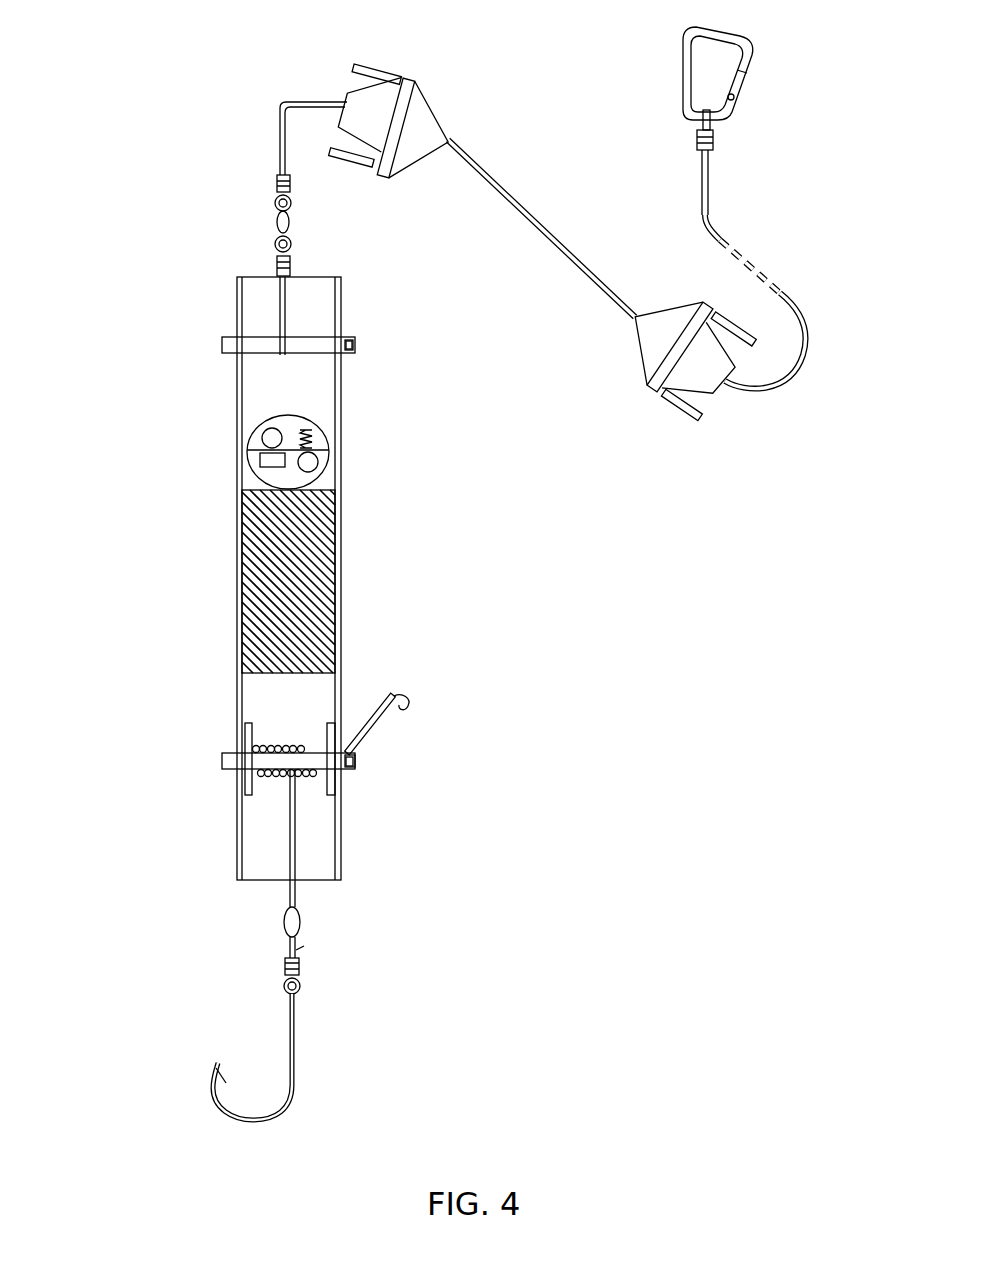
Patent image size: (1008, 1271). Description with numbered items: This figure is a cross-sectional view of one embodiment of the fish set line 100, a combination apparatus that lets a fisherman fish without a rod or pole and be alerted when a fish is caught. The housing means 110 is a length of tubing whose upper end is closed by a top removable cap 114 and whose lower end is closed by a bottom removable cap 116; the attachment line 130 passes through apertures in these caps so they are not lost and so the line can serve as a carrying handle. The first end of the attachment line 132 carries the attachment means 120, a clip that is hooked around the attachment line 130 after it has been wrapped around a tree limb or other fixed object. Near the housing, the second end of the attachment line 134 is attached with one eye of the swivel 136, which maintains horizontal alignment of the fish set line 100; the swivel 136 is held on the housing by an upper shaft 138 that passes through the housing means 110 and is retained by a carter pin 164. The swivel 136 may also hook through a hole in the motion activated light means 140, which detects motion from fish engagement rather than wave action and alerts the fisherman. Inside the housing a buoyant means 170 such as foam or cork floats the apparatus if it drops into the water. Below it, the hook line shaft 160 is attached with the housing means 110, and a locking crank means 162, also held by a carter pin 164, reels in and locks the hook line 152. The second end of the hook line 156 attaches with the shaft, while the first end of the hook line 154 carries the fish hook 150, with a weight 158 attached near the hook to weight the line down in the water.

The fish set line 100 is at (150, 525).
The housing means 110 is at (341, 300).
The top removable cap 114 is at (422, 113).
The bottom removable cap 116 is at (652, 348).
The attachment means 120 is at (732, 117).
The attachment line 130 is at (279, 120).
The first end of the attachment line 132 is at (698, 143).
The second end of the attachment line 134 is at (277, 174).
The swivel 136 is at (290, 222).
The upper shaft 138 is at (258, 343).
The motion activated light means 140 is at (320, 441).
The fish hook 150 is at (298, 1072).
The hook line 152 is at (296, 853).
The first end of the hook line 154 is at (300, 985).
The second end of the hook line 156 is at (262, 745).
The weight 158 is at (300, 925).
The hook line shaft 160 is at (224, 757).
The locking crank means 162 is at (377, 725).
The carter pin 164 is at (355, 345).
The buoyant means 170 is at (310, 594).